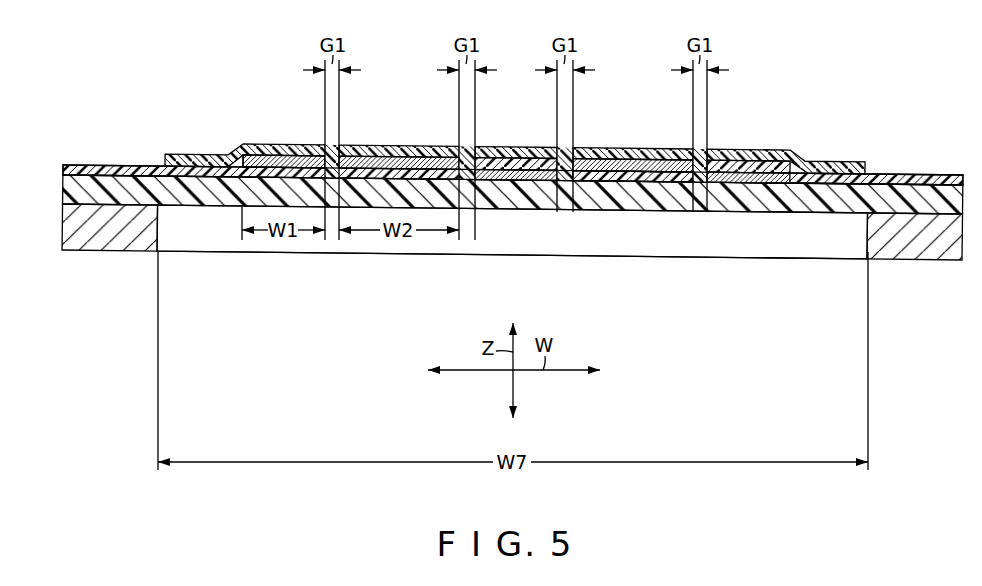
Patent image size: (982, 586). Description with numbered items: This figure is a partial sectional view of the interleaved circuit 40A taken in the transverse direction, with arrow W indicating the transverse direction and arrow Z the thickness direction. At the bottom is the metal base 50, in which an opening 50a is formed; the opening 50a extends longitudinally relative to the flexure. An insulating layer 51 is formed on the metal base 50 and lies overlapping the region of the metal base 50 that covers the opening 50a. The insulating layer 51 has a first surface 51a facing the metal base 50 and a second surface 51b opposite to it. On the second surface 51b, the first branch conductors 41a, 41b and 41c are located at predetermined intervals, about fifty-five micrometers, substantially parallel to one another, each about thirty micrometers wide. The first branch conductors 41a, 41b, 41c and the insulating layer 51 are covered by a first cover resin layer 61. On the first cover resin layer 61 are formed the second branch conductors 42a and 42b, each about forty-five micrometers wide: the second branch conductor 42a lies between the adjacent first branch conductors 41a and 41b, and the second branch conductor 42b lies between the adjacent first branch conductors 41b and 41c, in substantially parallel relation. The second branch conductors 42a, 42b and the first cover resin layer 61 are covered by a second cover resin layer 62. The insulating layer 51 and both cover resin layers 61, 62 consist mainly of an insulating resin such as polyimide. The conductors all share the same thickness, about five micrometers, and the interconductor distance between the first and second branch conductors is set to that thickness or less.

The interleaved circuit 40A is at (790, 65).
The first branch conductor 41a is at (295, 152).
The first branch conductor 41b is at (516, 178).
The first branch conductor 41c is at (742, 180).
The second branch conductor 42a is at (400, 143).
The second branch conductor 42b is at (645, 146).
The metal base 50 is at (124, 246).
The opening 50a is at (648, 242).
The insulating layer 51 is at (553, 192).
The first surface 51a is at (211, 207).
The second surface 51b is at (235, 147).
The first cover resin layer 61 is at (607, 177).
The second cover resin layer 62 is at (511, 148).